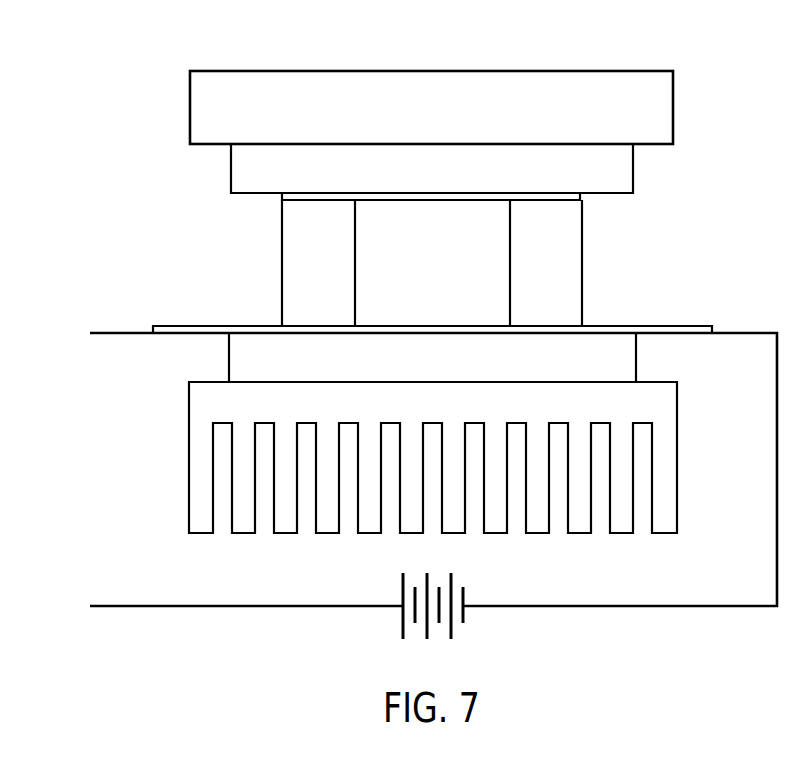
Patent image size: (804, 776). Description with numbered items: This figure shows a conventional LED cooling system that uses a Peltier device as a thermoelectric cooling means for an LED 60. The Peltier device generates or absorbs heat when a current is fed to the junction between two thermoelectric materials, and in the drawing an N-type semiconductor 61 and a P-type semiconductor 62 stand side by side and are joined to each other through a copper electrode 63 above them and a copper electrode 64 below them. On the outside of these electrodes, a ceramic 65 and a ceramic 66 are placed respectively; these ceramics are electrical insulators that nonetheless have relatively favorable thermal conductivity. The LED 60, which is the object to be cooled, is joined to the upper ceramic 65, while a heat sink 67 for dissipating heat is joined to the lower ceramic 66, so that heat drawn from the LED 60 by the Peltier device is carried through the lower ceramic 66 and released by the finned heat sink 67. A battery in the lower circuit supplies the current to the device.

The LED 60 is at (414, 80).
The ceramic 65 is at (232, 172).
The copper electrode 63 is at (582, 196).
The N-type semiconductor 61 is at (287, 262).
The P-type semiconductor 62 is at (575, 265).
The copper electrode 64 is at (693, 328).
The ceramic 66 is at (235, 356).
The heat sink 67 is at (202, 475).